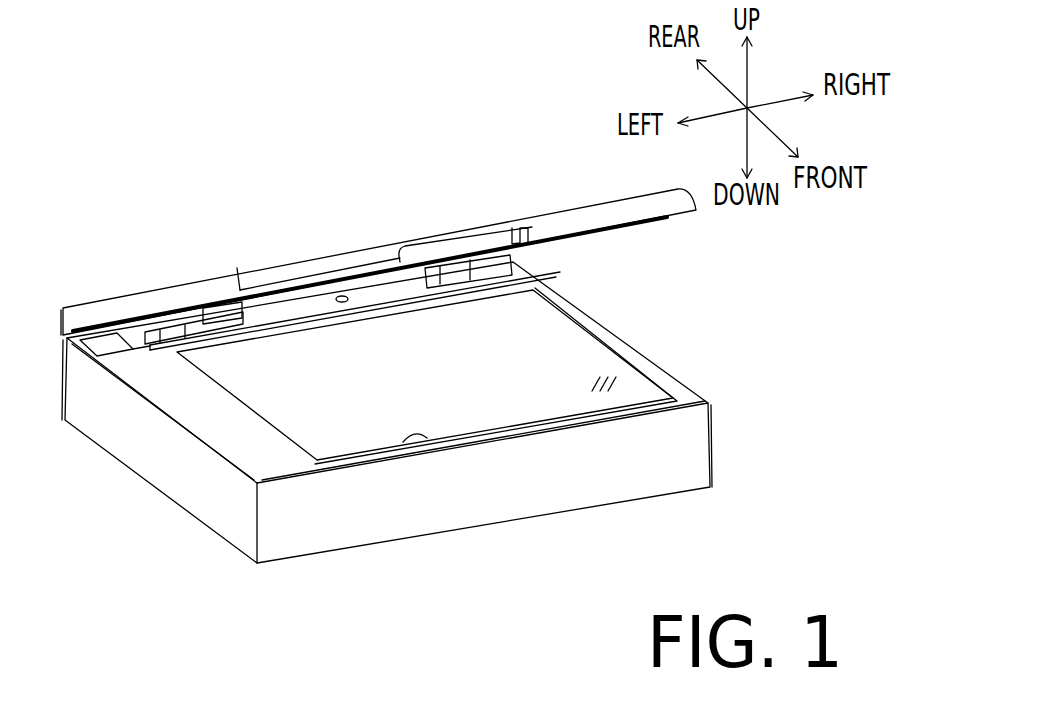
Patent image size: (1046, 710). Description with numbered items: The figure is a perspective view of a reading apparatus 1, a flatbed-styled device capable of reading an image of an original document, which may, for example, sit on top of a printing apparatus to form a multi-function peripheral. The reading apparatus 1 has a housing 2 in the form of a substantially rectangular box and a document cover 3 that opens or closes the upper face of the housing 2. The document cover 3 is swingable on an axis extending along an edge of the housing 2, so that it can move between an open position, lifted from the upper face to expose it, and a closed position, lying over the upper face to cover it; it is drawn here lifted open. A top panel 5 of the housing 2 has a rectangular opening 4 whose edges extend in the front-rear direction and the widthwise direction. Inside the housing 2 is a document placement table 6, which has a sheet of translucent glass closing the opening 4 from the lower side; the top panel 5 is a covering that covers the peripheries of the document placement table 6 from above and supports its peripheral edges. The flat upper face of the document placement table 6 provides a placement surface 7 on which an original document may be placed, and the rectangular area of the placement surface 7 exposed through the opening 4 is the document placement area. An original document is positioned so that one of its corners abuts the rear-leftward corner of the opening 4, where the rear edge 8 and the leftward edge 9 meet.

The reading apparatus 1 is at (379, 636).
The housing 2 is at (622, 490).
The document cover 3 is at (358, 242).
The opening 4 is at (427, 440).
The top panel 5 is at (165, 378).
The document placement table 6 is at (562, 347).
The placement surface 7 is at (460, 390).
The rear edge 8 is at (338, 327).
The leftward edge 9 is at (265, 413).